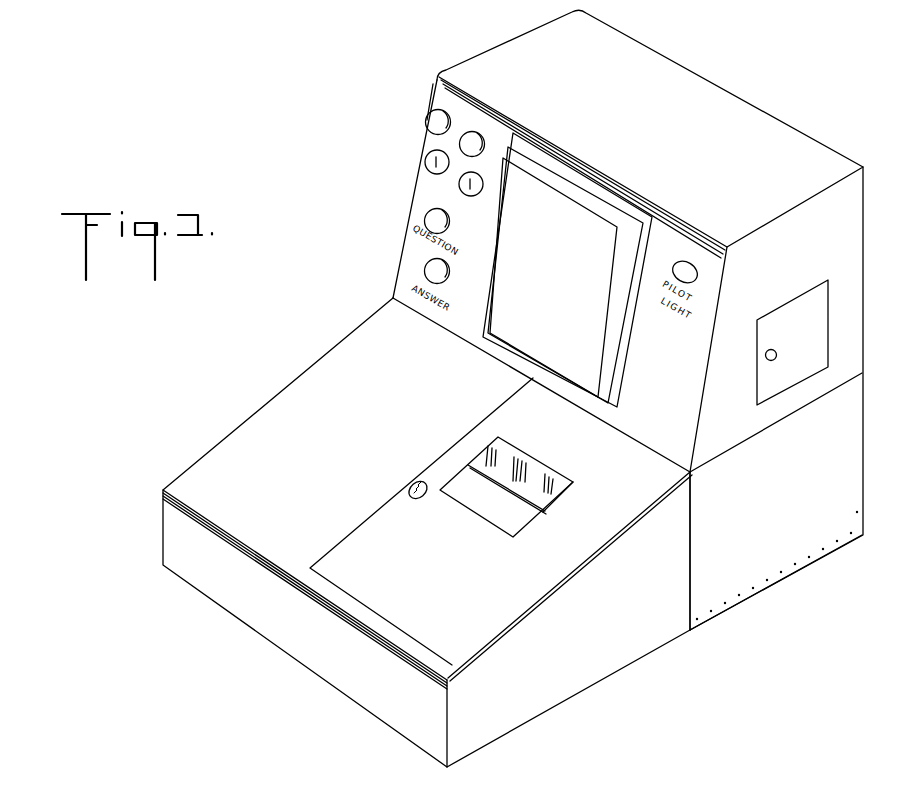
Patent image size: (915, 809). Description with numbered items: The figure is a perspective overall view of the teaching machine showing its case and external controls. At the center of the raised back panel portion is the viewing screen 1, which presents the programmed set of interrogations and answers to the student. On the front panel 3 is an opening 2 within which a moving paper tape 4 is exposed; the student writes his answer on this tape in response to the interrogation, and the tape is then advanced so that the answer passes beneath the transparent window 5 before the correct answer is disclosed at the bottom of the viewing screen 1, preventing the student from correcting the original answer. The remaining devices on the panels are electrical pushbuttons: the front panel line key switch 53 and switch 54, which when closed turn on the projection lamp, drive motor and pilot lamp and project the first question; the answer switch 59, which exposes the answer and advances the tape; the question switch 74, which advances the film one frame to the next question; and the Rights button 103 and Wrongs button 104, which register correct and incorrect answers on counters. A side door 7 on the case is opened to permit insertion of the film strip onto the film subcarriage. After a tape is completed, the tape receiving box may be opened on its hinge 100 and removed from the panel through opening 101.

The viewing screen 1 is at (587, 332).
The opening 2 is at (553, 488).
The front panel 3 is at (277, 420).
The paper tape 4 is at (457, 487).
The transparent window 5 is at (537, 472).
The side door 7 is at (808, 317).
The front panel line key switch 53 is at (428, 162).
The switch 54 is at (461, 184).
The answer switch 59 is at (426, 270).
The question switch 74 is at (426, 221).
The hinge 100 is at (777, 577).
The opening 101 is at (690, 603).
The Rights button 103 is at (478, 136).
The Wrongs button 104 is at (432, 118).